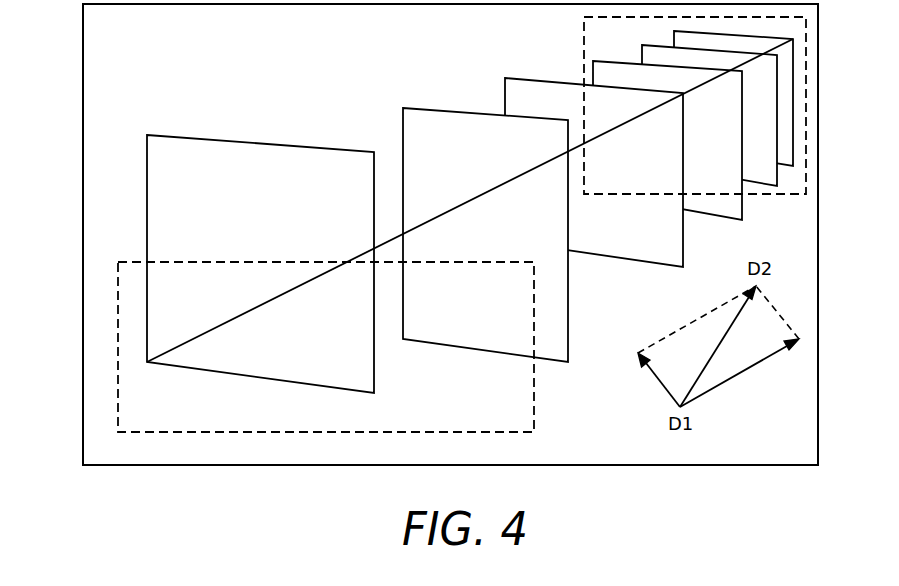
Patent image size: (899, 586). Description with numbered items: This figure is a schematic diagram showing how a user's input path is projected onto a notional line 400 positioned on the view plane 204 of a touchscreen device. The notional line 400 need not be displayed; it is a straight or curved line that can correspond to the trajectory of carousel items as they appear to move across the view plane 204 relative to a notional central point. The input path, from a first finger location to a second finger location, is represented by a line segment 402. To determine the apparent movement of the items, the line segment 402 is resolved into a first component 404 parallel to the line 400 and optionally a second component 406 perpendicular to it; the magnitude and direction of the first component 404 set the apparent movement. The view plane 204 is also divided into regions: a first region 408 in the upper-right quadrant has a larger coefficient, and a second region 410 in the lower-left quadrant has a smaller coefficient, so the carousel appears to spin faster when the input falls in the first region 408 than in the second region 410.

The view plane 204 is at (83, 260).
The notional line 400 is at (300, 289).
The line segment 402 is at (718, 337).
The first component 404 is at (740, 373).
The second component 406 is at (668, 393).
The first region 408 is at (806, 104).
The second region 410 is at (534, 418).